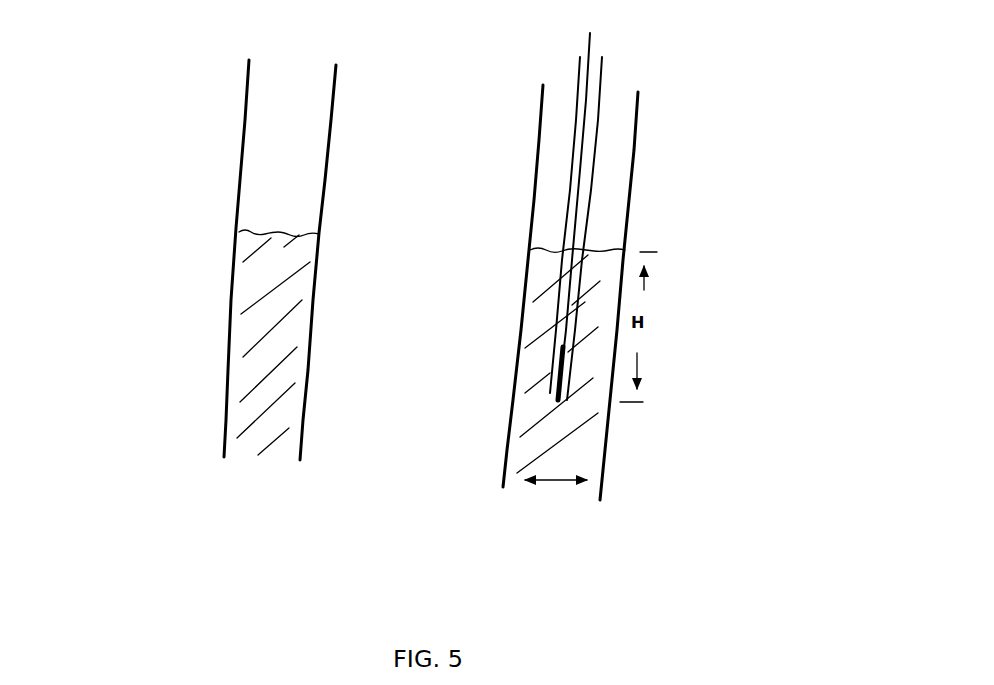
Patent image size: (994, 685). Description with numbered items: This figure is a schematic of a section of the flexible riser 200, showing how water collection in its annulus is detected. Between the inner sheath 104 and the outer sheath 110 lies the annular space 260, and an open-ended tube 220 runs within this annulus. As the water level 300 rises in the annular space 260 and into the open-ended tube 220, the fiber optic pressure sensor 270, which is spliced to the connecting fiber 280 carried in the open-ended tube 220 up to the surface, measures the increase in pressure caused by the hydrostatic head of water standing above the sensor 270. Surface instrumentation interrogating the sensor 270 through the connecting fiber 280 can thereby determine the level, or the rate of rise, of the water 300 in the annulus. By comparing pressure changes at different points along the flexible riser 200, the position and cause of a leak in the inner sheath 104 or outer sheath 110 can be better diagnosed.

The flexible riser 200 is at (232, 188).
The inner sheath 104 is at (487, 472).
The outer sheath 110 is at (618, 422).
The connecting fiber 280 is at (602, 41).
The open-ended tube 220 is at (600, 143).
The fiber optic pressure sensor 270 is at (535, 364).
The water level 300 is at (529, 282).
The annular space 260 is at (557, 487).